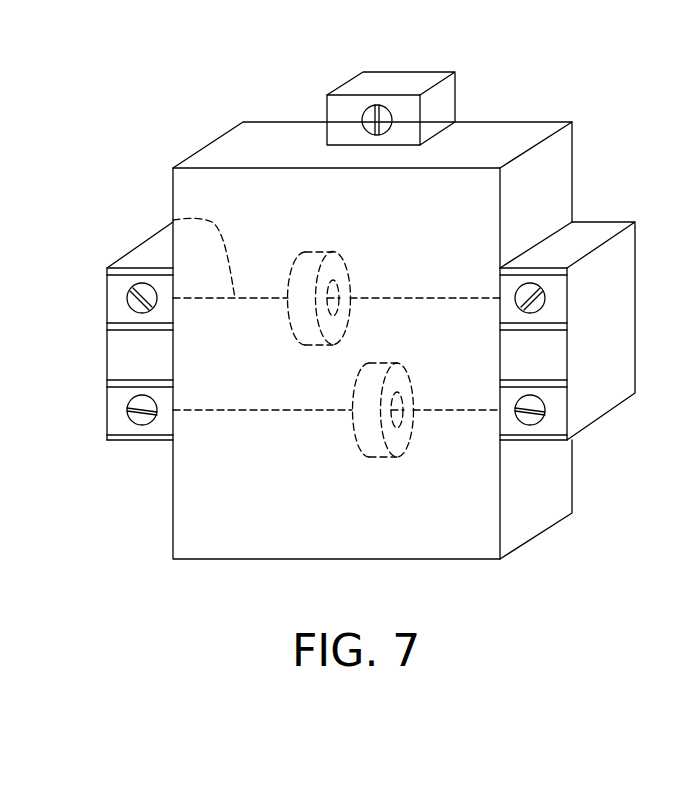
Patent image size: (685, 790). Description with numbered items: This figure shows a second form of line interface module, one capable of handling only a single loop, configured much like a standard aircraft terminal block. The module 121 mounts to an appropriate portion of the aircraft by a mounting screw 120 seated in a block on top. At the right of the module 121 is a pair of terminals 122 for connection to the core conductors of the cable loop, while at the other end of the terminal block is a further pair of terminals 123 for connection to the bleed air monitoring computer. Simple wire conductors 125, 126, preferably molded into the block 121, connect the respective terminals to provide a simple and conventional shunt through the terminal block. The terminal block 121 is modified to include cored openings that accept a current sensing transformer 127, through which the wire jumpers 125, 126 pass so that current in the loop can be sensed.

The mounting screw 120 is at (393, 120).
The module 121 is at (558, 190).
The pair of terminals 122 is at (545, 298).
The further pair of terminals 123 is at (125, 300).
The wire conductor 125 is at (173, 221).
The wire conductor 126 is at (318, 410).
The current sensing transformer 127 is at (295, 262).